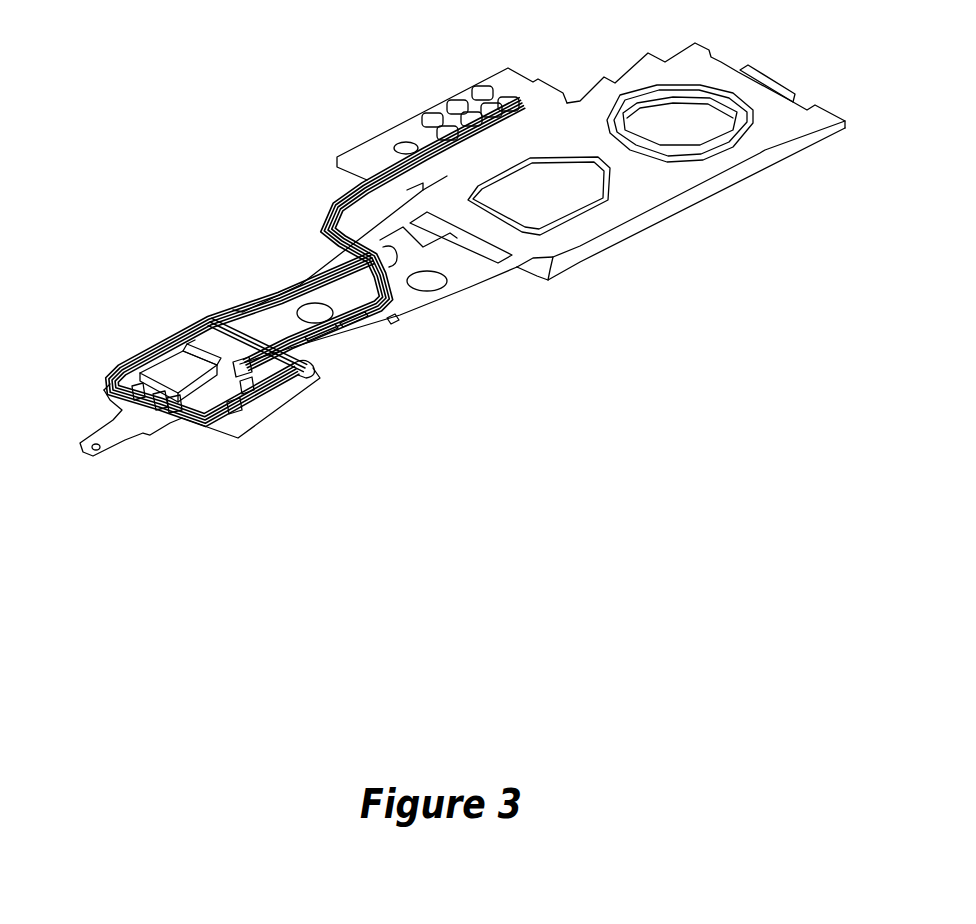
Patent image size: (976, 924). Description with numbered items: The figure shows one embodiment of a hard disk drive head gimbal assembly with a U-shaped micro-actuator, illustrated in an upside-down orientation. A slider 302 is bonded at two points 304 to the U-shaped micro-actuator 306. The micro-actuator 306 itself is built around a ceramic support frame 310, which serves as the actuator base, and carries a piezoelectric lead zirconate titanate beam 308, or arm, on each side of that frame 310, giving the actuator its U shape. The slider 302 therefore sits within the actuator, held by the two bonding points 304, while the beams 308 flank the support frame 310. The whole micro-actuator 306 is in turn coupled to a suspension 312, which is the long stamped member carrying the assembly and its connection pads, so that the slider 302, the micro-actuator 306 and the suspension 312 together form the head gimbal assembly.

The slider 302 is at (178, 368).
The bonding points 304 is at (127, 371).
The U-shaped micro-actuator 306 is at (249, 388).
The piezoelectric PZT beam 308 is at (160, 362).
The ceramic support frame 310 is at (205, 350).
The suspension 312 is at (645, 183).